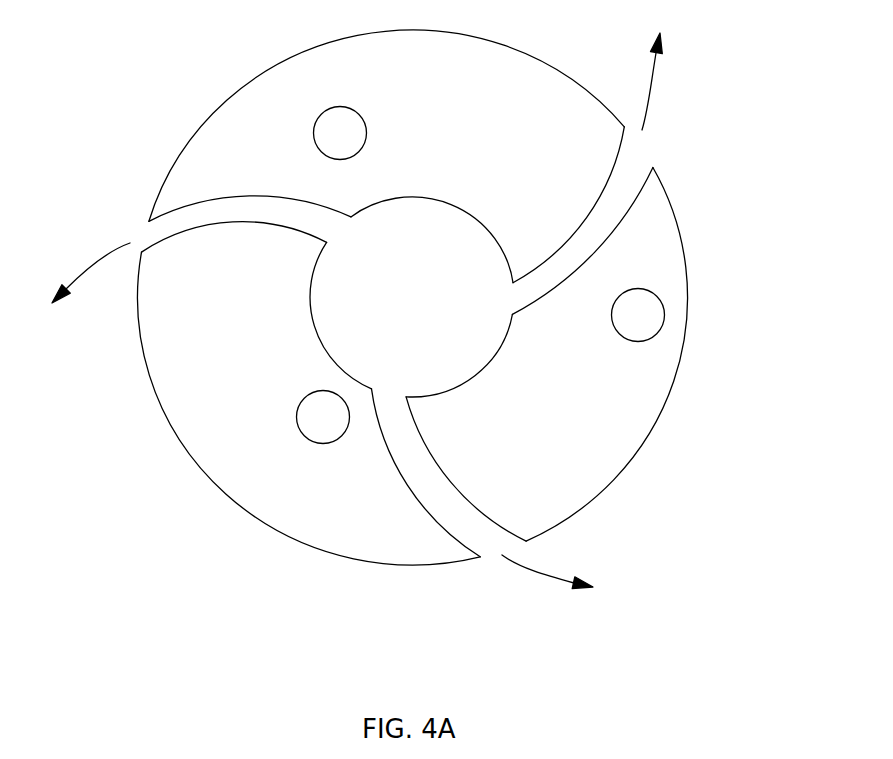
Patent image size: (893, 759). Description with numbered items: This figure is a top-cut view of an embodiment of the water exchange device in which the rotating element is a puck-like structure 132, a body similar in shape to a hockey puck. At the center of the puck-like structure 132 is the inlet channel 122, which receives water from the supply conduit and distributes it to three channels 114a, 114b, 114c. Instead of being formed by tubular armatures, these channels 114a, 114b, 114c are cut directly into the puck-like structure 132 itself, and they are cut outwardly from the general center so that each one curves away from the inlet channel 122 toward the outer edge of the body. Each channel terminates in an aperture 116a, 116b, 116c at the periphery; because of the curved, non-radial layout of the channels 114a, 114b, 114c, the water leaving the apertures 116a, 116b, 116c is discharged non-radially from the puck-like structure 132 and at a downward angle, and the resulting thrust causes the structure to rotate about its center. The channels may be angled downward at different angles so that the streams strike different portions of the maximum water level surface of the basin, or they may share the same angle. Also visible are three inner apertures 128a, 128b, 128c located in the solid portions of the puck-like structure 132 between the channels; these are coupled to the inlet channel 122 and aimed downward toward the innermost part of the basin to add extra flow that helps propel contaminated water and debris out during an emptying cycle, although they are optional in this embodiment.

The channel 114a is at (597, 235).
The channel 114b is at (423, 478).
The channel 114c is at (257, 207).
The aperture 116a is at (643, 152).
The aperture 116b is at (492, 550).
The aperture 116c is at (145, 235).
The inlet channel 122 is at (416, 228).
The inner aperture 128a is at (337, 118).
The inner aperture 128b is at (643, 315).
The inner aperture 128c is at (320, 427).
The puck-like structure 132 is at (612, 453).